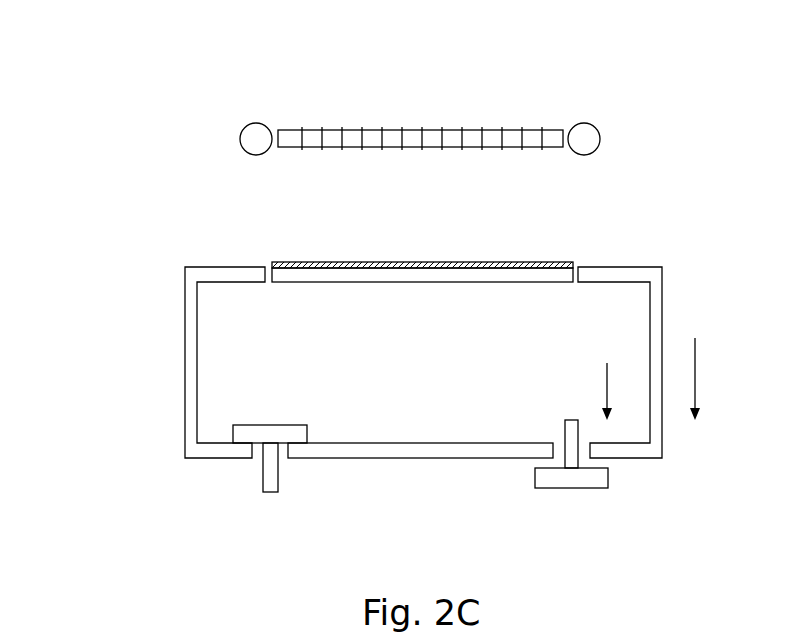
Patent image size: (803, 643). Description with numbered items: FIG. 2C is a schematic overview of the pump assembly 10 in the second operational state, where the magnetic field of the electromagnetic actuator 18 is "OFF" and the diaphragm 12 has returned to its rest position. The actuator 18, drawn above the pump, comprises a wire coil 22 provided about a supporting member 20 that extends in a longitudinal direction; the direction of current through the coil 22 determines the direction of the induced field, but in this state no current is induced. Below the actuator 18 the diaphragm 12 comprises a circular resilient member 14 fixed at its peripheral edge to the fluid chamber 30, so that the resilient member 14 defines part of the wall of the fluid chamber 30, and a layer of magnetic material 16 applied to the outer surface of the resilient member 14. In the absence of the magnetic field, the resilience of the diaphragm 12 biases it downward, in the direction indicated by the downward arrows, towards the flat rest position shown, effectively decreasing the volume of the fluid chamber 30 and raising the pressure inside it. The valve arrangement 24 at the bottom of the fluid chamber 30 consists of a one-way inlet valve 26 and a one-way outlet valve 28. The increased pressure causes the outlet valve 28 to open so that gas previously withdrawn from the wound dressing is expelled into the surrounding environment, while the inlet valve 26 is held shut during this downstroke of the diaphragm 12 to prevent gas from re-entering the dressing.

The pump assembly 10 is at (96, 240).
The diaphragm 12 is at (246, 240).
The resilient member 14 is at (545, 273).
The layer of magnetic material 16 is at (553, 262).
The electromagnetic actuator 18 is at (572, 110).
The supporting member 20 is at (277, 130).
The wire coil 22 is at (322, 128).
The valve arrangement 24 is at (220, 472).
The inlet valve 26 is at (268, 493).
The outlet valve 28 is at (595, 475).
The fluid chamber 30 is at (662, 302).